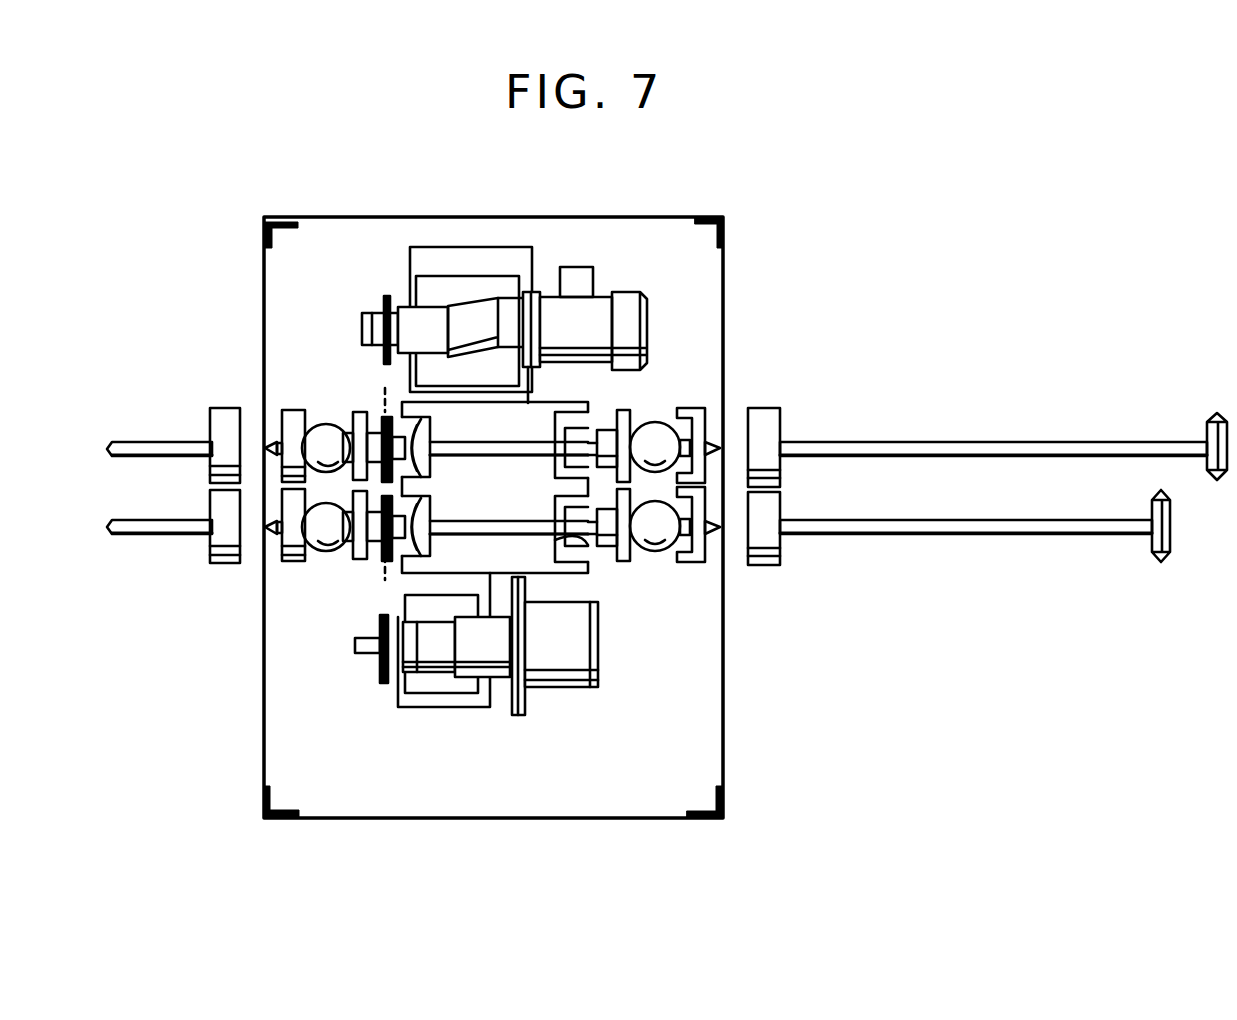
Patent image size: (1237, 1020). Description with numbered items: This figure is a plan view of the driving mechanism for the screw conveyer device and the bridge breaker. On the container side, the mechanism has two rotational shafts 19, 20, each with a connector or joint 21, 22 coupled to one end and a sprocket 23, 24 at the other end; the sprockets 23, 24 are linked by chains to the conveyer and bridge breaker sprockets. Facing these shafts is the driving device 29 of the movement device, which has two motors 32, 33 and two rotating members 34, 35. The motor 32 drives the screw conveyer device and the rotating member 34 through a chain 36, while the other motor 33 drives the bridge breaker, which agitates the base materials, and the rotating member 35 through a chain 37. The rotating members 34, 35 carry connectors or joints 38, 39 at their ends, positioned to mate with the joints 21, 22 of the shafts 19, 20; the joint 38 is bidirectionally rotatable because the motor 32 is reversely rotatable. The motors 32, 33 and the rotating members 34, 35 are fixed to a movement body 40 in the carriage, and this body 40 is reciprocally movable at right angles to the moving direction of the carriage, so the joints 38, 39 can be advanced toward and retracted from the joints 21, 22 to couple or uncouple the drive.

The rotational shaft 19 is at (986, 531).
The rotational shaft 20 is at (964, 440).
The connector or joint 21 is at (212, 548).
The connector or joint 22 is at (212, 420).
The sprocket 23 is at (1158, 538).
The sprocket 24 is at (1207, 430).
The driving device 29 is at (662, 387).
The motor 32 is at (465, 660).
The motor 33 is at (500, 312).
The rotating member 34 is at (568, 546).
The rotating member 35 is at (535, 440).
The chain 36 is at (385, 576).
The chain 37 is at (385, 388).
The connector or joint 38 is at (283, 548).
The connector or joint 39 is at (288, 418).
The movement body 40 is at (710, 772).